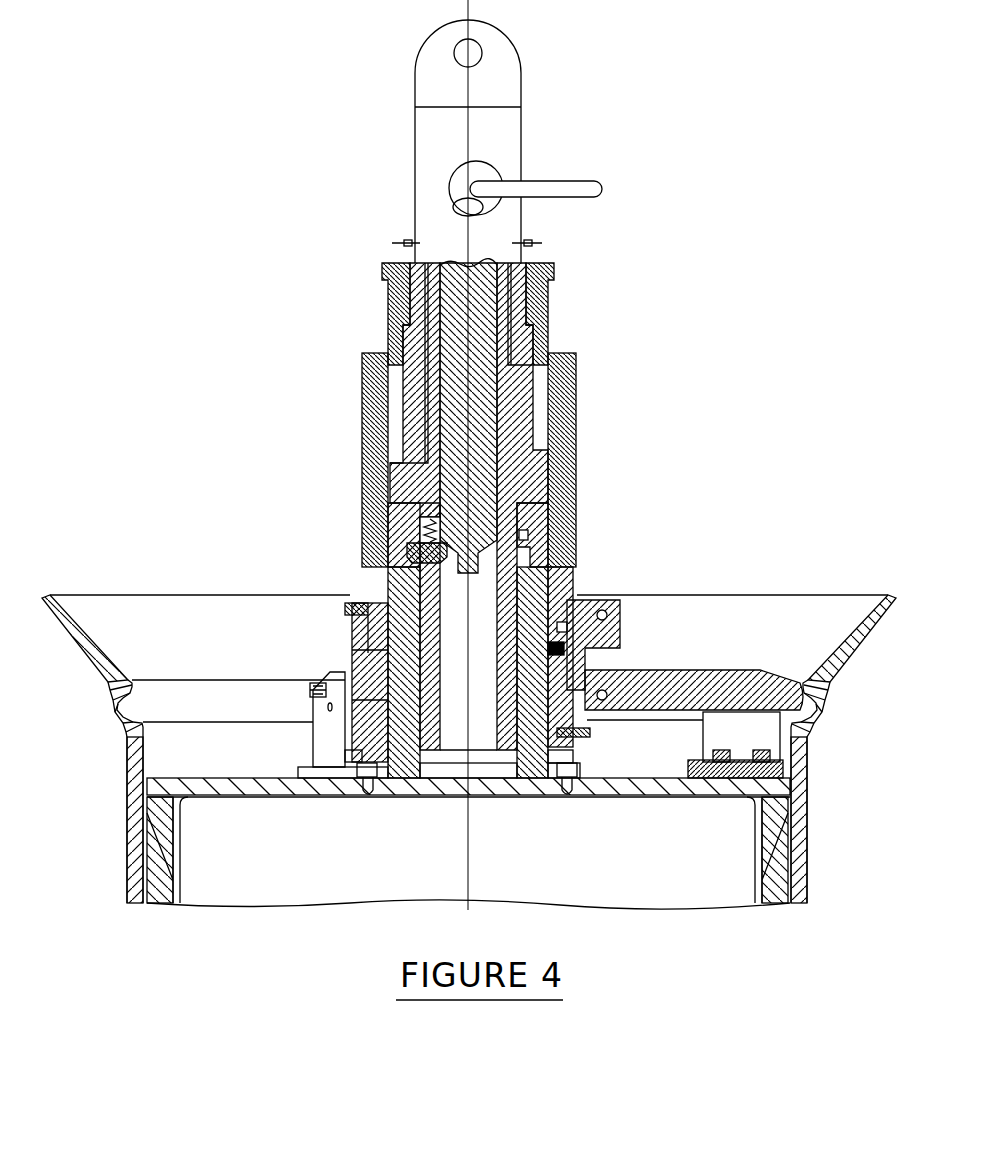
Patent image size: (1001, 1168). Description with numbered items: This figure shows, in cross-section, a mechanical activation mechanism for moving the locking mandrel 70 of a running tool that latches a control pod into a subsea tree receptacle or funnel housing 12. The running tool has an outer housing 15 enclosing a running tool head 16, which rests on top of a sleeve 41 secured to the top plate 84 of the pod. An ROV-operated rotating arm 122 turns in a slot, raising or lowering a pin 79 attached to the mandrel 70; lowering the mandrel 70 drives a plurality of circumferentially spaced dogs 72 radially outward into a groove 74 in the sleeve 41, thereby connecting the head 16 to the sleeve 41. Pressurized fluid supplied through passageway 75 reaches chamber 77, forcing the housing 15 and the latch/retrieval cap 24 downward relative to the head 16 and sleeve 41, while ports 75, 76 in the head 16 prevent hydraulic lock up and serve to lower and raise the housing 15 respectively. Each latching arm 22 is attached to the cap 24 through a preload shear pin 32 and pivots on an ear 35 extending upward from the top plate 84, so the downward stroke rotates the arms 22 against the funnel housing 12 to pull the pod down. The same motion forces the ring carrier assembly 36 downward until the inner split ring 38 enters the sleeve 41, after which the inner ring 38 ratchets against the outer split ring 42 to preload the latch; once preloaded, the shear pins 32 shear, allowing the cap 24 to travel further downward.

The funnel housing 12 is at (128, 874).
The outer housing 15 is at (557, 445).
The running tool head 16 is at (516, 440).
The latching arm 22 is at (663, 688).
The latch/retrieval cap 24 is at (574, 584).
The preload shear pin 32 is at (355, 603).
The ear 35 is at (750, 733).
The ring carrier assembly 36 is at (287, 640).
The inner split ring 38 is at (558, 677).
The sleeve 41 is at (350, 793).
The outer split ring 42 is at (588, 718).
The locking mandrel 70 is at (485, 403).
The dogs 72 is at (383, 530).
The groove 74 is at (522, 552).
The passageway 75 is at (517, 318).
The port 76 is at (410, 318).
The chamber 77 is at (383, 386).
The pin 79 is at (480, 210).
The top plate 84 is at (180, 789).
The rotating arm 122 is at (558, 186).